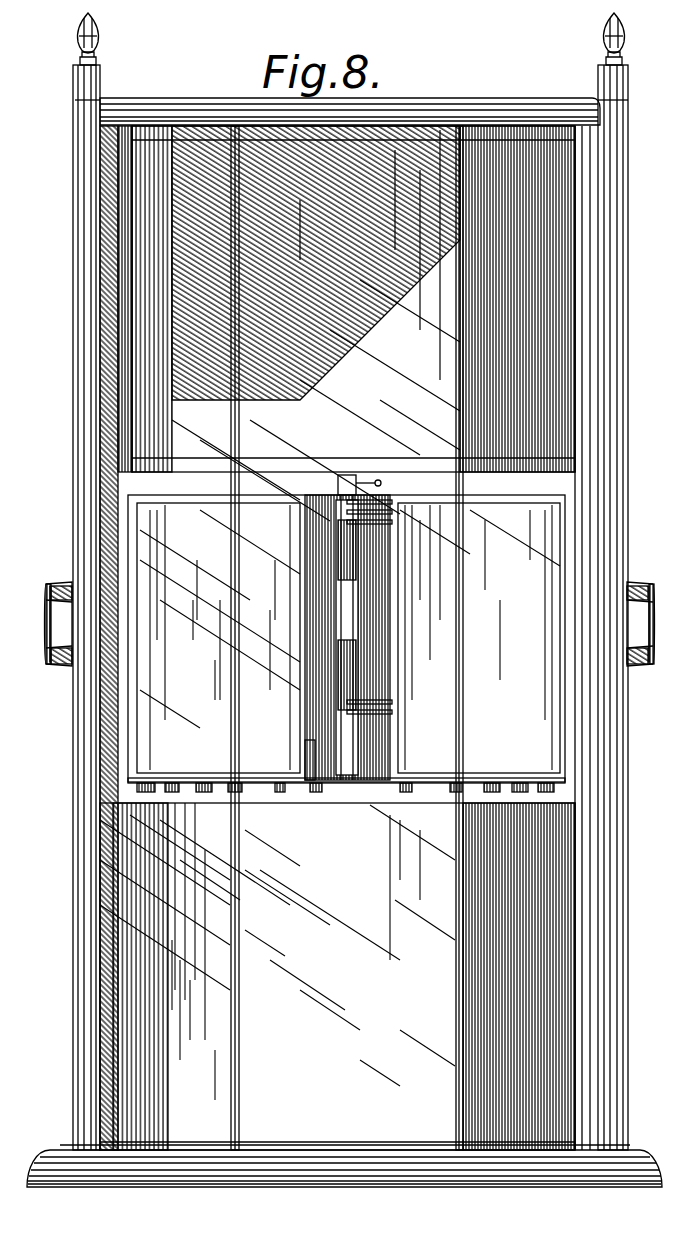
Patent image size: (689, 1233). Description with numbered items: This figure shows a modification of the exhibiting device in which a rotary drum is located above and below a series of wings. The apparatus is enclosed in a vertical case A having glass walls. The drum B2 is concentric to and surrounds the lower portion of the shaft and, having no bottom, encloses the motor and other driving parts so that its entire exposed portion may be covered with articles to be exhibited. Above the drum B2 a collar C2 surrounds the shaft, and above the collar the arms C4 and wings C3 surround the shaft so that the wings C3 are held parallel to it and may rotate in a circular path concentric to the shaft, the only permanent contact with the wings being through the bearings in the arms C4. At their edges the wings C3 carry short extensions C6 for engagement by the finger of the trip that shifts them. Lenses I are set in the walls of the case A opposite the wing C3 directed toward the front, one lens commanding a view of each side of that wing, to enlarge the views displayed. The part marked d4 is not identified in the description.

The case A is at (70, 290).
The lenses I is at (44, 622).
The wings C3 is at (175, 540).
The arms C4 is at (390, 520).
The short extensions C6 is at (148, 788).
The guide d4 is at (306, 756).
The collar C2 is at (345, 790).
The drum B2 is at (385, 930).